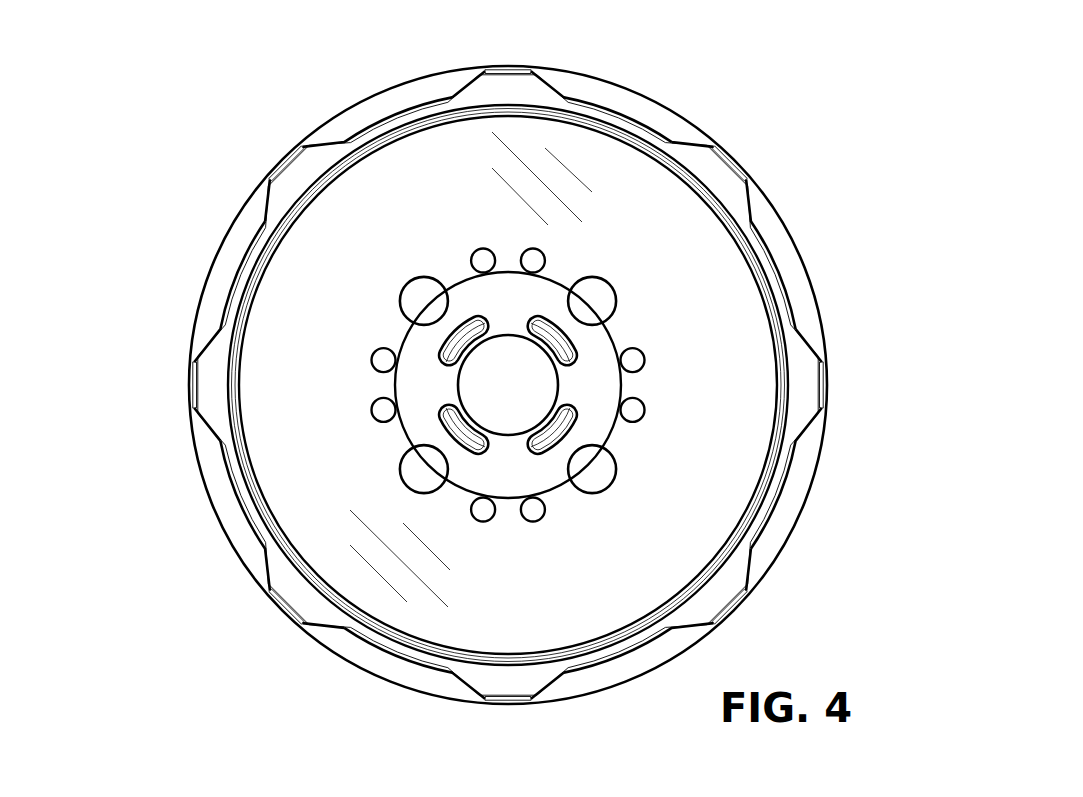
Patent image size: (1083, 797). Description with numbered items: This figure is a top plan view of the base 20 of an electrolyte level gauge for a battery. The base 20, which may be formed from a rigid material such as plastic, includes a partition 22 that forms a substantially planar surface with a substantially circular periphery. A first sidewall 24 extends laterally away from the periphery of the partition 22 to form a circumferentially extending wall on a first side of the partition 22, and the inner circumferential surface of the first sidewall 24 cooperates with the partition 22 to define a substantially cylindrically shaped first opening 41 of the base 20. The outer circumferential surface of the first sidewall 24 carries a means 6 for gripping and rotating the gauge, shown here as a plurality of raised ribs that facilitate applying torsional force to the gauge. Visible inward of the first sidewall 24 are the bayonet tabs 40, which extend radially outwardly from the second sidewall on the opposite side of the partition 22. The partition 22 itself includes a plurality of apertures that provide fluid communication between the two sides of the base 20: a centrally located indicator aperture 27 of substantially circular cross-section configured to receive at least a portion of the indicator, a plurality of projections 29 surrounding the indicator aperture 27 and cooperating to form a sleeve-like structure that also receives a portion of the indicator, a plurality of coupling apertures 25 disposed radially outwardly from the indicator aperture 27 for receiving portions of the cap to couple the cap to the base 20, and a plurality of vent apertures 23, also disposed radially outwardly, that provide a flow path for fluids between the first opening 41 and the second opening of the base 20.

The base 20 is at (781, 201).
The bayonet tabs 40 is at (508, 334).
The first sidewall 24 is at (236, 280).
The means for gripping and rotating the gauge 6 is at (291, 176).
The partition 22 is at (411, 226).
The indicator aperture 27 is at (496, 393).
The projections 29 is at (560, 362).
The coupling apertures 25 is at (593, 300).
The vent apertures 23 is at (634, 360).
The first opening 41 is at (314, 370).